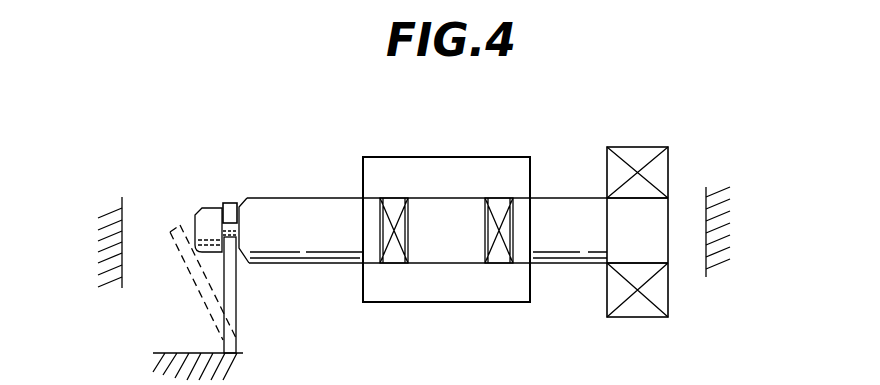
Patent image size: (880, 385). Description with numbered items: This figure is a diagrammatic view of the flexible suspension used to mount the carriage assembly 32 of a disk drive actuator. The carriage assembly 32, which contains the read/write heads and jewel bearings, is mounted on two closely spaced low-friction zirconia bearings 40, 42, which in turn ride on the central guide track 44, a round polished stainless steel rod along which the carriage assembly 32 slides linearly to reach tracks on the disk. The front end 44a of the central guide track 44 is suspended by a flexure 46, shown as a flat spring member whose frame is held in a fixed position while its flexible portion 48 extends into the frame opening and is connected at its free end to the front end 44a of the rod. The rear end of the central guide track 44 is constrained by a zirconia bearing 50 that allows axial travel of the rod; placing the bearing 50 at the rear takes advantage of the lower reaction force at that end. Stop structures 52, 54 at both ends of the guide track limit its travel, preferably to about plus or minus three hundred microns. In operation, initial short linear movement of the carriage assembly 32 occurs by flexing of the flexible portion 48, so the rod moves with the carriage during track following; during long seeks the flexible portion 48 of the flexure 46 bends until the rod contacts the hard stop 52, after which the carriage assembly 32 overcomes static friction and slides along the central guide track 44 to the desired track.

The carriage assembly 32 is at (395, 164).
The bearing 40 is at (500, 263).
The bearing 42 is at (395, 263).
The central guide track 44 is at (578, 264).
The front end of the central guide track 44a is at (205, 207).
The flexure 46 is at (204, 212).
The flexible portion 48 is at (229, 203).
The zirconia bearing 50 is at (638, 150).
The stop structure 52 is at (103, 247).
The stop structure 54 is at (727, 238).